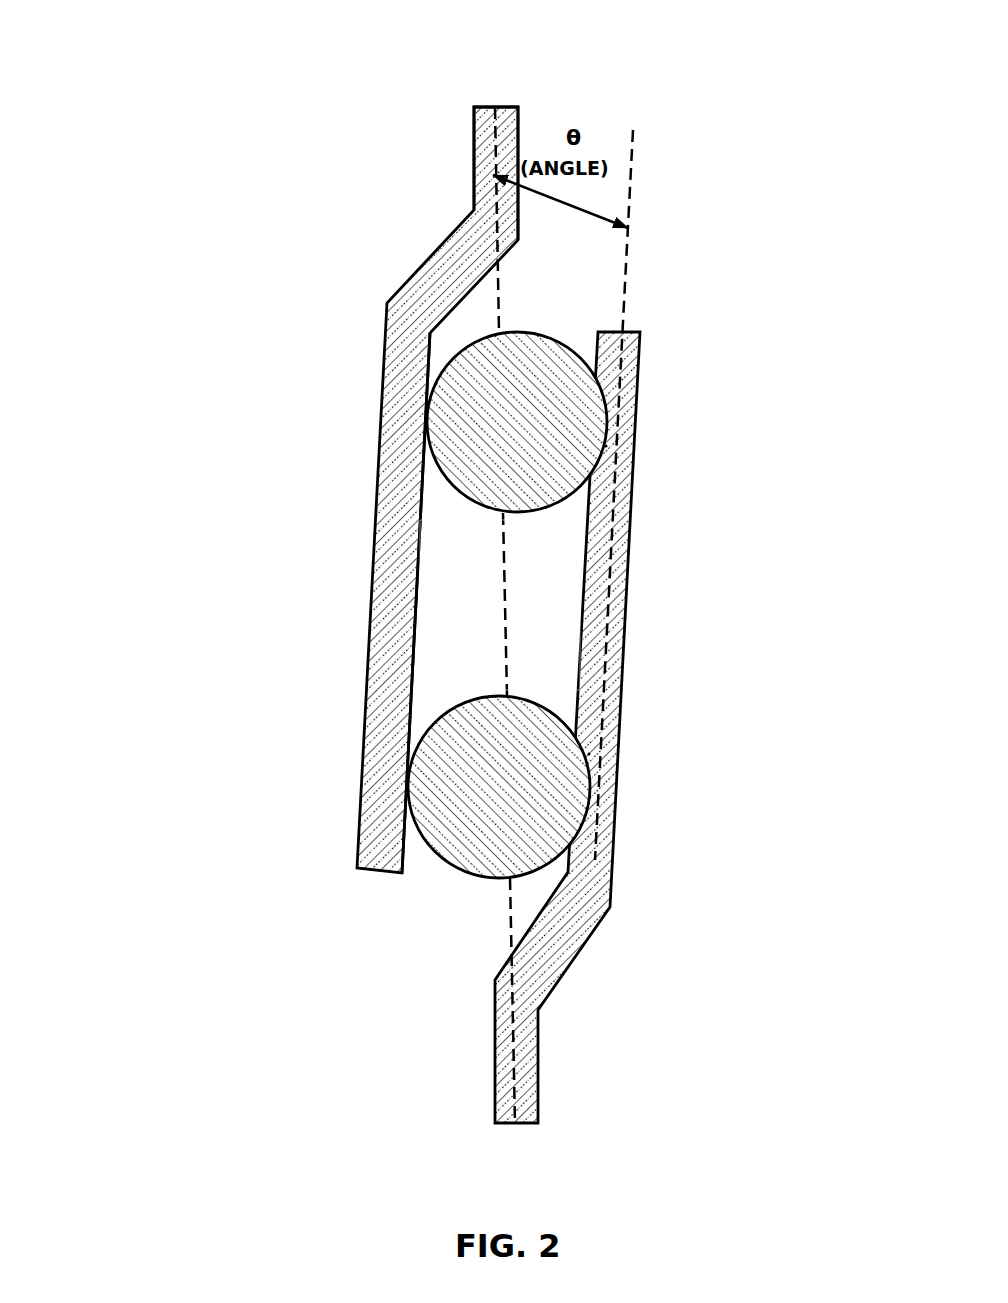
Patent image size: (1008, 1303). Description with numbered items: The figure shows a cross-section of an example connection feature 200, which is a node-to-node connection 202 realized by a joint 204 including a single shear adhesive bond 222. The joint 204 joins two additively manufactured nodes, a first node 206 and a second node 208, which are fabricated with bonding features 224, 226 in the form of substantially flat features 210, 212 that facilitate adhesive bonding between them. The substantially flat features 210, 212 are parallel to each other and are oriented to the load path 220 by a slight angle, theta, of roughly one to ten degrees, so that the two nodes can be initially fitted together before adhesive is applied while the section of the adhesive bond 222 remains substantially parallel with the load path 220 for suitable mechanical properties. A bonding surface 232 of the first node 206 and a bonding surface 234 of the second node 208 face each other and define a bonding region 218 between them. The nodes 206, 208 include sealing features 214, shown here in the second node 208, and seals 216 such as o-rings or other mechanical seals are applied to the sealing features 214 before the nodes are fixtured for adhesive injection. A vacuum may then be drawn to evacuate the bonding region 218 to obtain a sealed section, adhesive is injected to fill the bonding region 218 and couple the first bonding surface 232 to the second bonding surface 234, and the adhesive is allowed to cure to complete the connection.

The connection feature 200 is at (130, 80).
The node-to-node connection 202 is at (205, 290).
The joint 204 is at (338, 557).
The first node 206 is at (474, 133).
The second node 208 is at (539, 1090).
The substantially flat feature 210 is at (362, 735).
The substantially flat feature 212 is at (638, 409).
The sealing feature 214 is at (608, 445).
The seal 216 is at (550, 477).
The bonding region 218 is at (500, 605).
The load path 220 is at (510, 920).
The single shear adhesive bond 222 is at (452, 612).
The bonding feature 224 is at (385, 343).
The bonding feature 226 is at (612, 884).
The bonding surface 232 is at (418, 574).
The bonding surface 234 is at (585, 546).